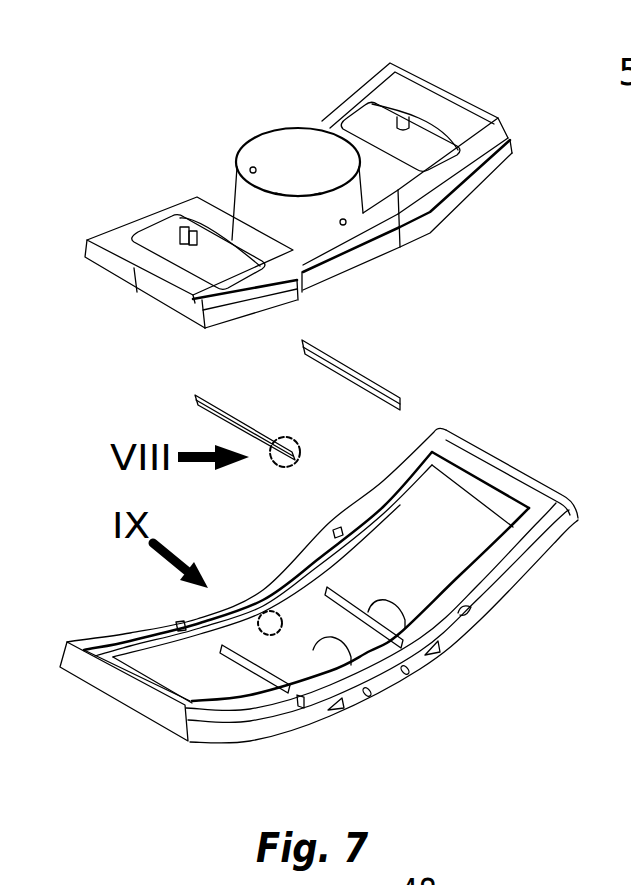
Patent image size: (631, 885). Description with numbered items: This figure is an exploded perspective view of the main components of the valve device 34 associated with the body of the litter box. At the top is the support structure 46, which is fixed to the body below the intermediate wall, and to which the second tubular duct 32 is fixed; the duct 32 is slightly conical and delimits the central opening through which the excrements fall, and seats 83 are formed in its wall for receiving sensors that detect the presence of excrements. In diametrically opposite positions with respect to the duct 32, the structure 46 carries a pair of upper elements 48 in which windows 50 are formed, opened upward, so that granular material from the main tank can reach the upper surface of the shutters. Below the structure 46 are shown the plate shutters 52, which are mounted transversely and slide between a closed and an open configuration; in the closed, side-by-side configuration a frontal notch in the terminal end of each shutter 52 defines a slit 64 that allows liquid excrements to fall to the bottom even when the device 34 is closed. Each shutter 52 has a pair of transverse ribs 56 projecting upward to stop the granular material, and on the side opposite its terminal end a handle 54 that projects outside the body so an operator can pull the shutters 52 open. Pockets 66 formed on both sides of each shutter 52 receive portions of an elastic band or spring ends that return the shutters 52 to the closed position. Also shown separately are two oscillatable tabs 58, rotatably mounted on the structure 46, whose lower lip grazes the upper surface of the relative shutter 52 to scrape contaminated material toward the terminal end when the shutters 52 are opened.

The second tubular duct 32 is at (277, 150).
The valve device 34 is at (455, 276).
The support structure 46 is at (495, 196).
The upper elements 48 is at (361, 132).
The windows 50 is at (399, 115).
The plate shutter 52 is at (528, 594).
The handle 54 is at (495, 470).
The transverse ribs 56 is at (248, 660).
The oscillatable tabs 58 is at (193, 405).
The slit 64 is at (257, 614).
The pockets 66 is at (180, 626).
The seats 83 is at (256, 168).